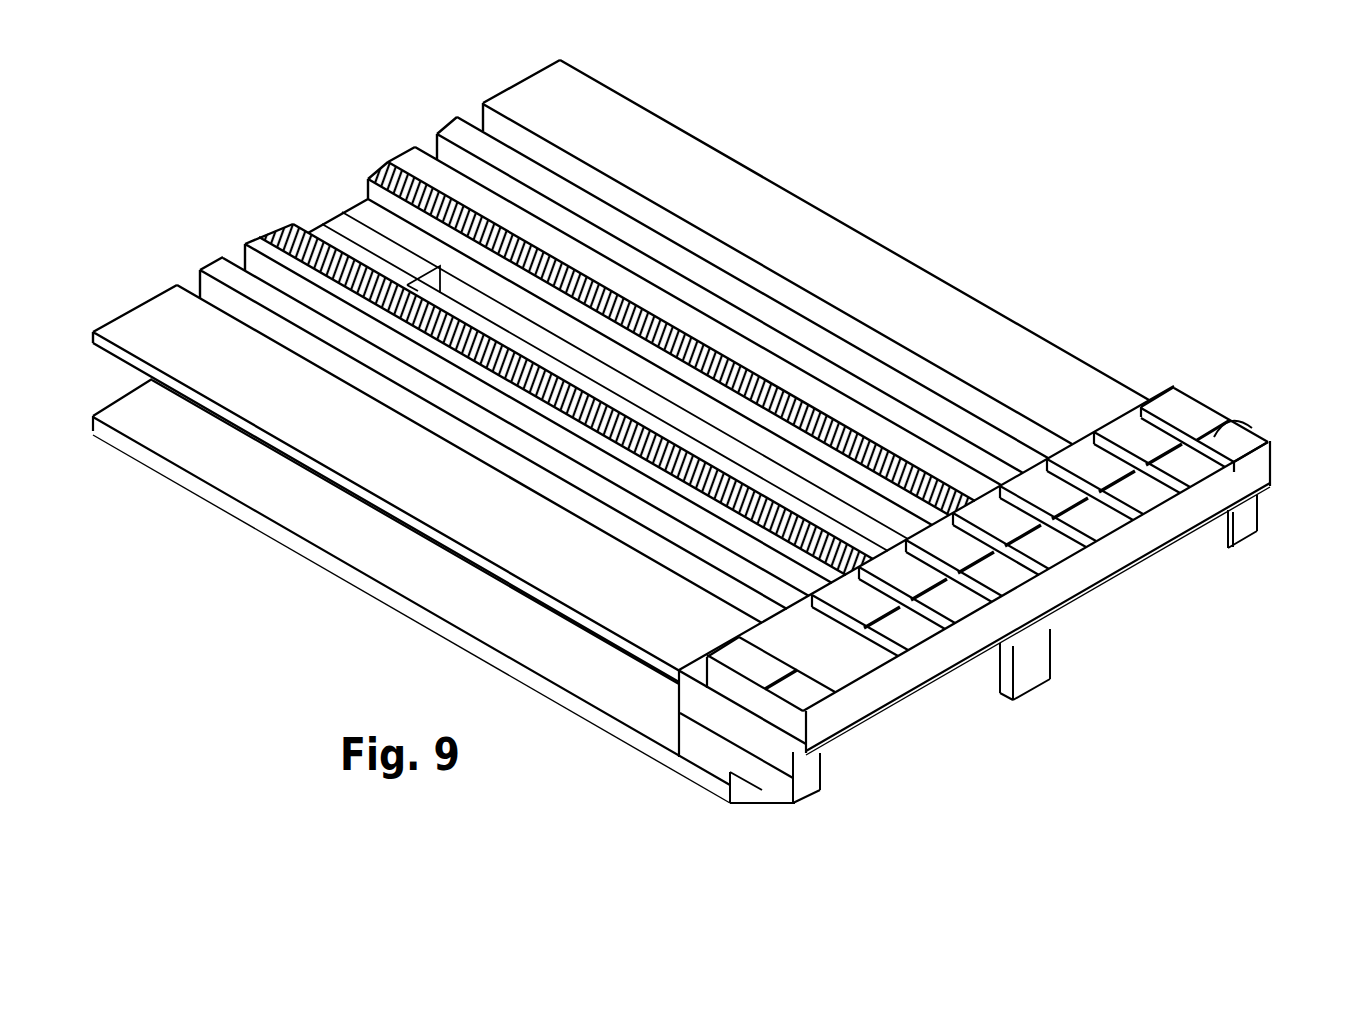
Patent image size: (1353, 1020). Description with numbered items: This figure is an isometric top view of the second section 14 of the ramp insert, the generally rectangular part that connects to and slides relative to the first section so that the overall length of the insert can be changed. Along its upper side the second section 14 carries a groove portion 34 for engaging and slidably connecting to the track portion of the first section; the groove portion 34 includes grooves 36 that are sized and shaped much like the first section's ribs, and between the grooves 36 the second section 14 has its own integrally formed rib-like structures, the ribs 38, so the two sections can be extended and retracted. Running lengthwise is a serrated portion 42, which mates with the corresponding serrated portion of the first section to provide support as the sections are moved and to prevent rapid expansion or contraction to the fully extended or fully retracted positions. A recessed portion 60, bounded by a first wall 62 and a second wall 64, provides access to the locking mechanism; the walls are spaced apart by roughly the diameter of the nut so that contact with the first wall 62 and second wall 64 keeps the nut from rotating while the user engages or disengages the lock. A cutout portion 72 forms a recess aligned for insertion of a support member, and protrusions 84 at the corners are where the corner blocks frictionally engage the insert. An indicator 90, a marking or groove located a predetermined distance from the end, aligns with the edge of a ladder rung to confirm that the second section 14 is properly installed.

The second section 14 is at (953, 174).
The groove portion 34 is at (668, 264).
The grooves 36 is at (424, 145).
The ribs 38 is at (540, 180).
The serrated portion 42 is at (382, 166).
The recessed portion 60 is at (440, 293).
The first wall 62 is at (700, 430).
The second wall 64 is at (487, 337).
The cutout portion 72 is at (517, 627).
The protrusions 84 is at (782, 788).
The indicator 90 is at (1226, 432).